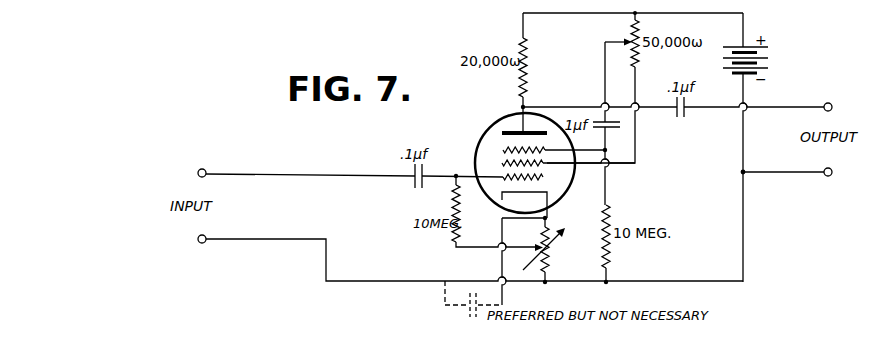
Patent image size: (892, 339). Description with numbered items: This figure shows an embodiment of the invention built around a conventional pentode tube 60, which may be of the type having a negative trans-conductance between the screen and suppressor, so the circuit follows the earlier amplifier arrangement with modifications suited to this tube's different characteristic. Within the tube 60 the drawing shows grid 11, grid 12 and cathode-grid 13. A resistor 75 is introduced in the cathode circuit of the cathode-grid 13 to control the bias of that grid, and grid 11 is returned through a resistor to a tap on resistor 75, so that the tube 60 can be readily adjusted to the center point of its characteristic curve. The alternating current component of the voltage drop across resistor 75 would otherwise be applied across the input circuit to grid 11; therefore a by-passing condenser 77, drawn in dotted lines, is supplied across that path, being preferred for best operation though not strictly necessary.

The pentode tube 60 is at (490, 128).
The grid 11 is at (532, 178).
The grid 12 is at (559, 164).
The cathode-grid 13 is at (544, 151).
The resistor 75 is at (548, 260).
The by-pass condenser 77 is at (466, 310).